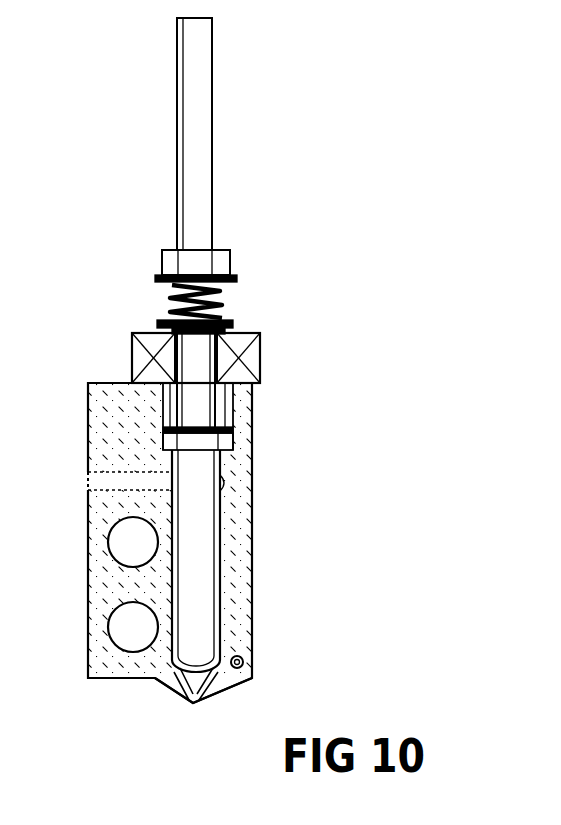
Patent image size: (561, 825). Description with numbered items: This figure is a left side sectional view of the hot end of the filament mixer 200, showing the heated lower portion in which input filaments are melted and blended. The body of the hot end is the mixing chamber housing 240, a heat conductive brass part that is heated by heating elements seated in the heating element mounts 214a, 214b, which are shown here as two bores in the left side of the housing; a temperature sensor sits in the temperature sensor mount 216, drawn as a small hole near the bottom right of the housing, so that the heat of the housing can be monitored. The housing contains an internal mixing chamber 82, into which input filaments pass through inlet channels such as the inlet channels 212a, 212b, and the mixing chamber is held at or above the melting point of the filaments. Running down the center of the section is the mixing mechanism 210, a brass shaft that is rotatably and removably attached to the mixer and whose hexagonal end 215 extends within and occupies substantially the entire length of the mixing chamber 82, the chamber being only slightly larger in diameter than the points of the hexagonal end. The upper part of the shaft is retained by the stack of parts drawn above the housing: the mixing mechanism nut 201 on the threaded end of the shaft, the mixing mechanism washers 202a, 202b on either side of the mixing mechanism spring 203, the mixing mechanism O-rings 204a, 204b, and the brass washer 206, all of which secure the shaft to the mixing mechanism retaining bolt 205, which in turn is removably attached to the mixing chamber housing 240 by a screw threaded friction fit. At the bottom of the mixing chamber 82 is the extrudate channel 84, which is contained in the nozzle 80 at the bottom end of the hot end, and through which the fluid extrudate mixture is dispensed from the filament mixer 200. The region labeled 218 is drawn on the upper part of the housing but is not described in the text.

The filament mixer 200 is at (302, 107).
The mixing mechanism 210 is at (185, 118).
The mixing mechanism nut 201 is at (168, 258).
The mixing mechanism washer 202a is at (237, 279).
The mixing mechanism washer 202b is at (232, 325).
The mixing mechanism spring 203 is at (168, 295).
The mixing mechanism O-ring 204a is at (160, 330).
The mixing mechanism O-ring 204b is at (232, 420).
The mixing mechanism retaining bolt 205 is at (260, 358).
The brass washer 206 is at (233, 455).
The upper housing portion 218 is at (100, 412).
The mixing chamber housing 240 is at (88, 458).
The inlet channel 212a is at (88, 478).
The inlet channel 212b is at (226, 483).
The hexagonal end 215 is at (203, 520).
The heating element mount 214a is at (130, 542).
The heating element mount 214b is at (130, 632).
The mixing chamber 82 is at (227, 565).
The temperature sensor mount 216 is at (244, 662).
The extrudate channel 84 is at (180, 697).
The nozzle 80 is at (223, 690).